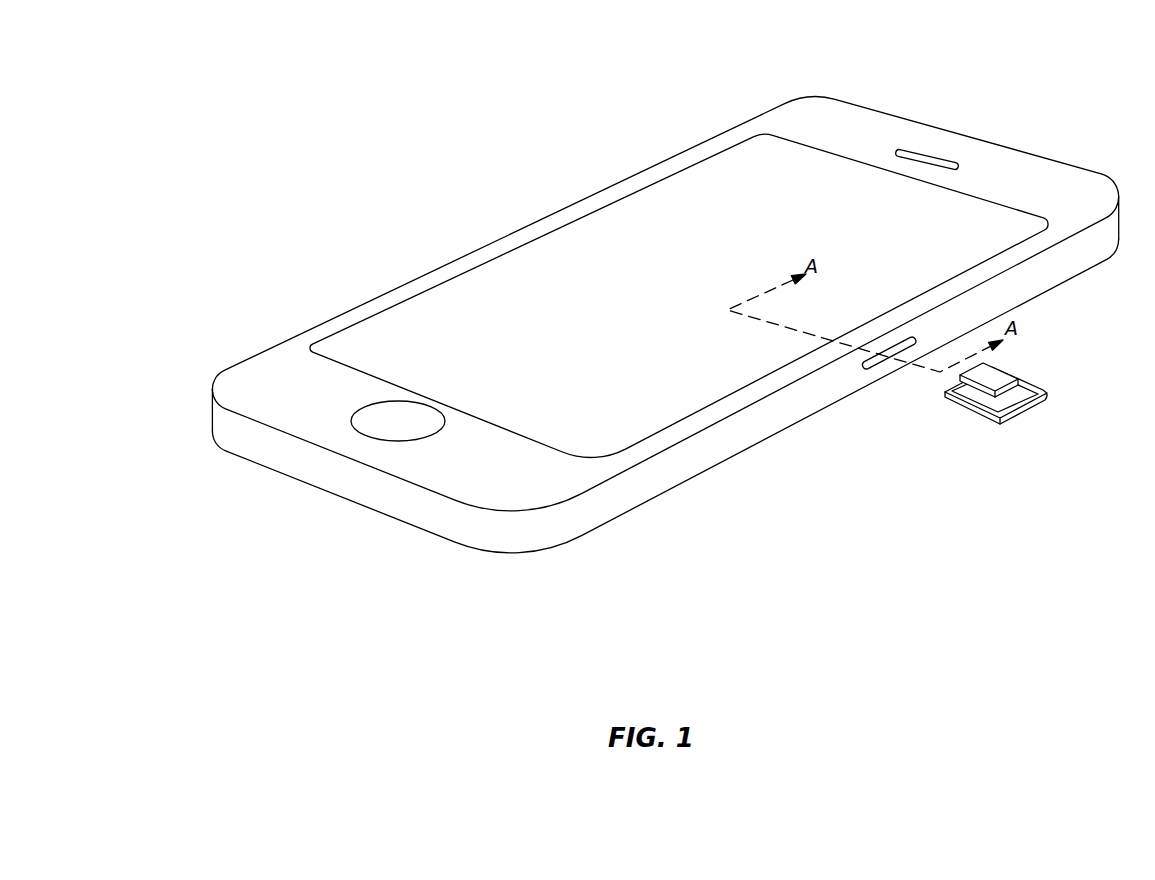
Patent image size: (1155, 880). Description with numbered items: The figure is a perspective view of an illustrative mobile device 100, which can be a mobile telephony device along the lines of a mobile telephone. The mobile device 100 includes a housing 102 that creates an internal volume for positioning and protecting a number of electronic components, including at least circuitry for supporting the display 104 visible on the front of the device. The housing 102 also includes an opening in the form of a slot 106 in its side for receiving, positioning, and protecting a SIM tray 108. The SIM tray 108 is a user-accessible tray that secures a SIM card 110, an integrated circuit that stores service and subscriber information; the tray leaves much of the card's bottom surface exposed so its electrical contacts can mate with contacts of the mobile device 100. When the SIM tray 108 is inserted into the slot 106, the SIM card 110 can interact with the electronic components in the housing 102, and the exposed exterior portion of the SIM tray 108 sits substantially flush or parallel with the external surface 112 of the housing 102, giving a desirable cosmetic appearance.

The mobile device 100 is at (665, 301).
The housing 102 is at (653, 498).
The display 104 is at (968, 241).
The slot 106 is at (873, 363).
The SIM tray 108 is at (1037, 403).
The SIM card 110 is at (980, 388).
The external surface 112 is at (822, 401).